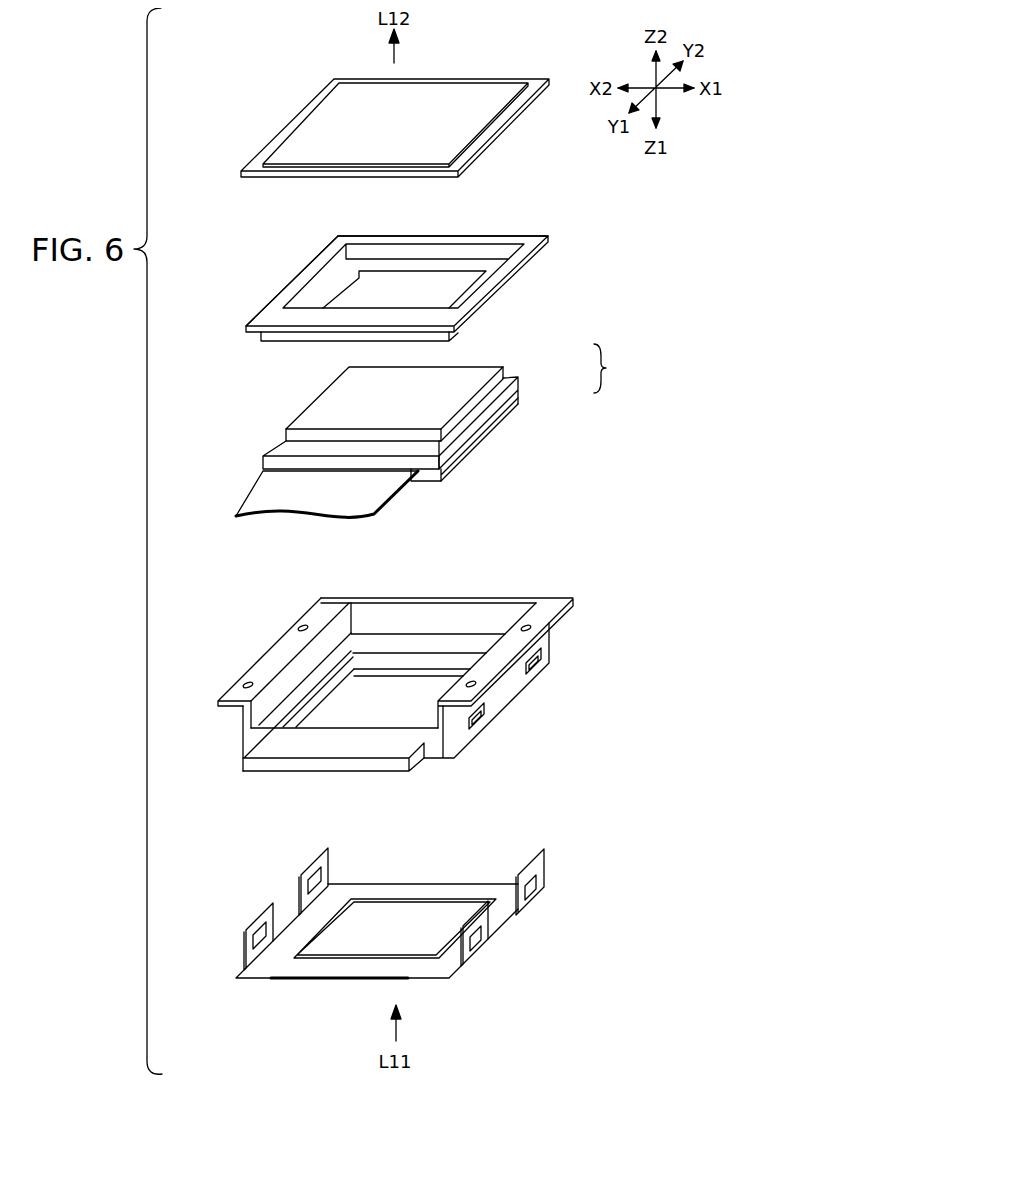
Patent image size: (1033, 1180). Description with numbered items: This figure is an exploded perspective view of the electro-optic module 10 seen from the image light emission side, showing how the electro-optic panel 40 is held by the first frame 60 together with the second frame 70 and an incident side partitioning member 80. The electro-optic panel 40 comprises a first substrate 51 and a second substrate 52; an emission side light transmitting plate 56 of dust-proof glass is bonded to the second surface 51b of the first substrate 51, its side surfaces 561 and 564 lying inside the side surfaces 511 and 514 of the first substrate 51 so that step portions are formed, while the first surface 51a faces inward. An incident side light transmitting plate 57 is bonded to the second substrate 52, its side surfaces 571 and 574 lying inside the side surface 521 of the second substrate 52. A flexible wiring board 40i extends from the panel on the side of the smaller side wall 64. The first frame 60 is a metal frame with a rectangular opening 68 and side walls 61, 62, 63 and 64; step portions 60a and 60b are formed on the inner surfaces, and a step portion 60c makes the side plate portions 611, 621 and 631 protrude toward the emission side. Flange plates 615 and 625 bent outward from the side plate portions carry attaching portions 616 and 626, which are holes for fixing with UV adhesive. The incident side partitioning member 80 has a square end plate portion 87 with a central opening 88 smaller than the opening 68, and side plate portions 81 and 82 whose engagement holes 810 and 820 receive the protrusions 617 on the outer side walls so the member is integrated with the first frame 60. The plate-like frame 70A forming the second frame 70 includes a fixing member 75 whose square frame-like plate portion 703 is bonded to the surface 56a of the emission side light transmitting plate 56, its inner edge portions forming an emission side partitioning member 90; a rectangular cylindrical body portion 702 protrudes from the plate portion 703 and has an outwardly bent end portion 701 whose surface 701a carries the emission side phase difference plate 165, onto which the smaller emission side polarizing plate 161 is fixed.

The electro-optic module 10 is at (195, 213).
The emission side polarizing plate 161 is at (478, 87).
The emission side phase difference plate 165 is at (535, 78).
The plate-like frame 70A is at (409, 263).
The second frame 70 is at (409, 263).
The end portion 701 is at (293, 283).
The surface 701a is at (322, 250).
The body portion 702 is at (330, 270).
The plate portion 703 is at (404, 289).
The emission side partitioning member 90 is at (343, 295).
The fixing member 75 is at (511, 278).
The electro-optic panel 40 is at (423, 438).
The emission side light transmitting plate 56 is at (405, 383).
The surface 56a is at (328, 395).
The side surface 564 is at (302, 433).
The side surface 561 is at (482, 400).
The first substrate 51 is at (403, 428).
The side surface 514 is at (277, 453).
The side surface 511 is at (482, 418).
The first surface of first substrate 51a is at (450, 477).
The second surface 51b is at (433, 447).
The second substrate 52 is at (499, 426).
The side surface 521 is at (483, 428).
The incident side light transmitting plate 57 is at (489, 463).
The side surface 571 is at (480, 438).
The side surface 574 is at (418, 481).
The flexible wiring board 40i is at (282, 498).
The first frame 60 is at (403, 673).
The side wall 62 is at (266, 633).
The flange plate 625 is at (313, 606).
The attaching portion 626 is at (297, 625).
The side wall 63 is at (447, 607).
The side plate portion 631 is at (485, 608).
The opening 68 is at (403, 668).
The side wall 61 is at (537, 681).
The flange plate 615 is at (557, 602).
The attaching portion 616 is at (530, 628).
The protrusion 617 is at (540, 660).
The side plate portion 611 is at (447, 722).
The side plate portion 621 is at (240, 722).
The side wall 64 is at (292, 750).
The step portion 60a is at (318, 705).
The step portion 60b is at (318, 687).
The step portion 60c is at (325, 662).
The incident side partitioning member 80 is at (402, 916).
The end plate portion 87 is at (502, 917).
The side plate portion 81 is at (404, 951).
The opening 88 is at (420, 957).
The side plate portion 82 is at (307, 895).
The engagement hole 820 is at (308, 866).
The engagement hole 810 is at (533, 888).